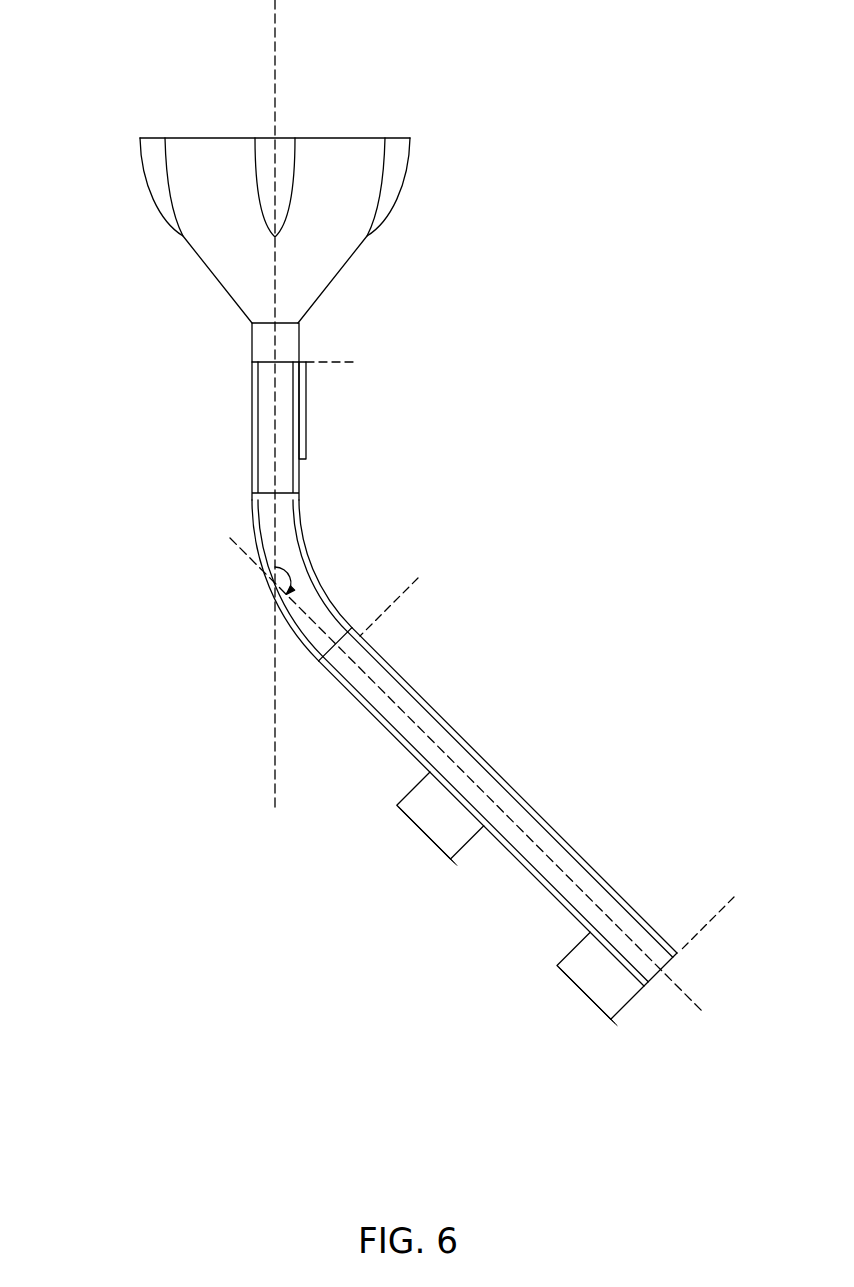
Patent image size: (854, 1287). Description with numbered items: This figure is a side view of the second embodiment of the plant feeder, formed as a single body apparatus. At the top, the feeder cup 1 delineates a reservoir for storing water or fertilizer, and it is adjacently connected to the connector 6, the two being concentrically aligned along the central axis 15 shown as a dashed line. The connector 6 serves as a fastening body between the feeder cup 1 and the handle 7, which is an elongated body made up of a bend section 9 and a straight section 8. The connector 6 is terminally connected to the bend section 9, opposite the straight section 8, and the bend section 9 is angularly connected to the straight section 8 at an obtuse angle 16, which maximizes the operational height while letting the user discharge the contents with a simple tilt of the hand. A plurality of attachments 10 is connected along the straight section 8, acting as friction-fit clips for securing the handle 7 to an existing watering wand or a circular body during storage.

The feeder cup 1 is at (127, 200).
The connector 6 is at (293, 350).
The handle 7 is at (493, 721).
The straight section 8 is at (734, 897).
The bend section 9 is at (358, 362).
The plurality of attachments 10 is at (388, 822).
The central axis 15 is at (275, 30).
The obtuse angle 16 is at (292, 583).